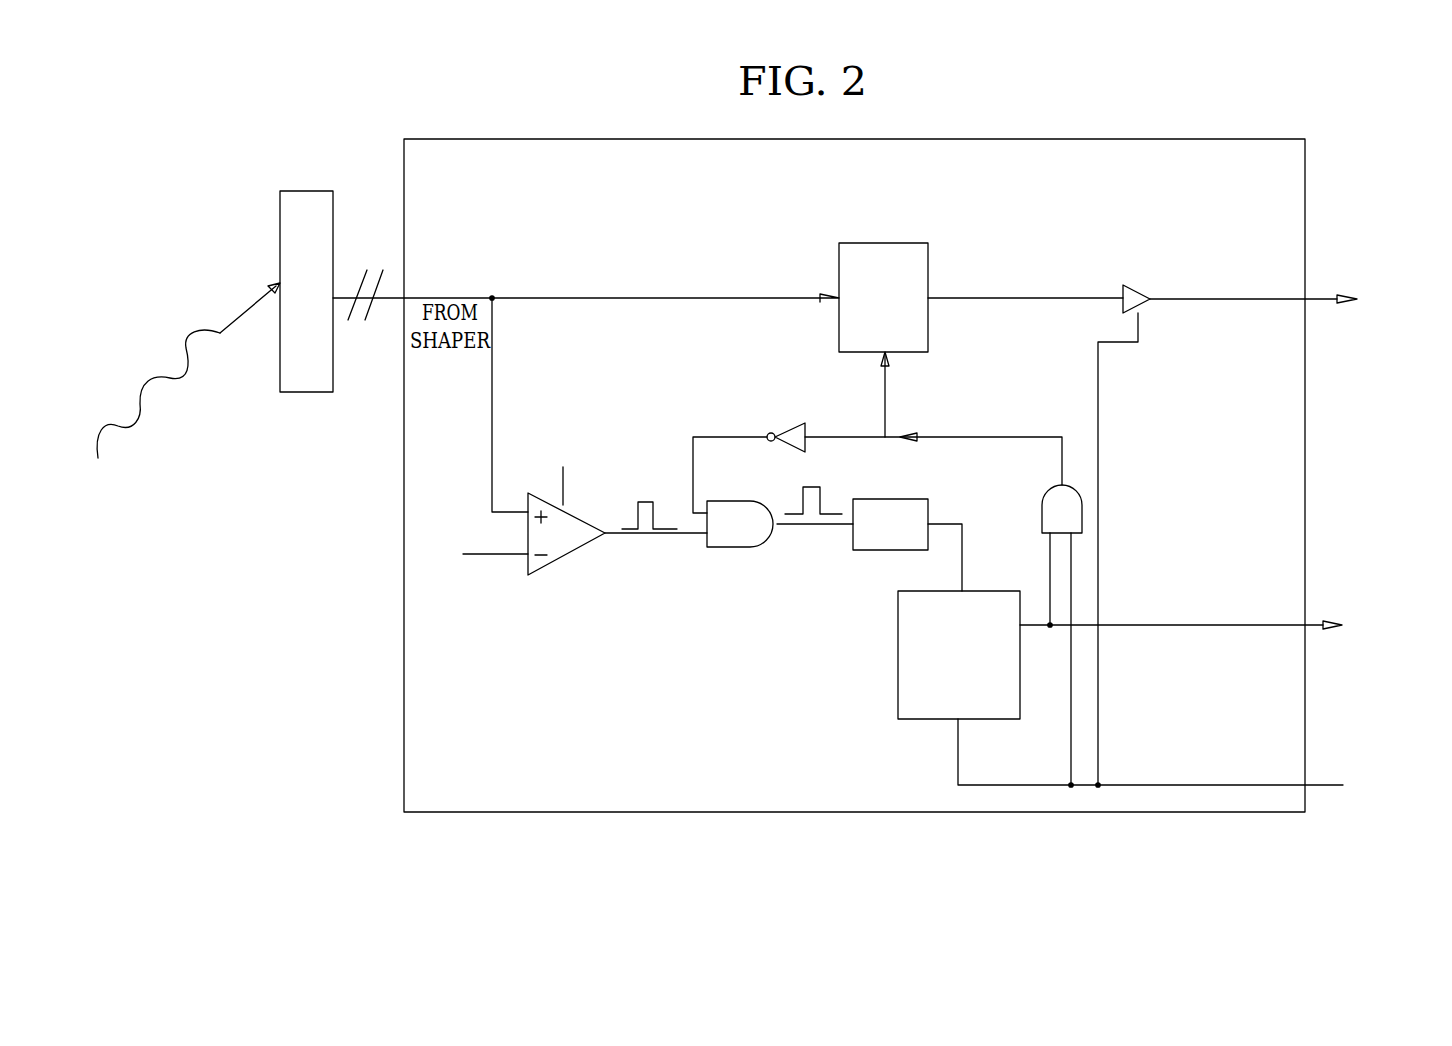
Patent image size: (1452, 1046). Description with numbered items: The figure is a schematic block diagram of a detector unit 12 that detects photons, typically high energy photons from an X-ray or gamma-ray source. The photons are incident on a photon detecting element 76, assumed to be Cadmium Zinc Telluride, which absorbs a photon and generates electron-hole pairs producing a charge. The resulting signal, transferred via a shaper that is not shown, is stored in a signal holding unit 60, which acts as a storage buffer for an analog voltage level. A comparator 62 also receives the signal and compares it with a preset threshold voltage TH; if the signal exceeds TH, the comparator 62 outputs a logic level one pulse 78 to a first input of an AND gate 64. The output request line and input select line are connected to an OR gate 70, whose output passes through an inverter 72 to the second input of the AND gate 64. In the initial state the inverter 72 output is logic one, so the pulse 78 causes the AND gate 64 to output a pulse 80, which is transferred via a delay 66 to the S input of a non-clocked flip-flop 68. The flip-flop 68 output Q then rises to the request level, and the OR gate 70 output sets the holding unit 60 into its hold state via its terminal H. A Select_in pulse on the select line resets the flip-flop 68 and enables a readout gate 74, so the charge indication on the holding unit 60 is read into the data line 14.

The detector unit 12 is at (900, 139).
The data line 14 is at (1322, 298).
The signal holding unit 60 is at (905, 243).
The comparator 62 is at (570, 555).
The AND gate 64 is at (735, 548).
The delay 66 is at (905, 499).
The non-clocked flip-flop 68 is at (898, 630).
The OR gate 70 is at (1042, 500).
The inverter 72 is at (795, 421).
The readout gate 74 is at (1120, 288).
The photon detecting element 76 is at (338, 242).
The pulse 78 is at (638, 500).
The pulse 80 is at (820, 491).